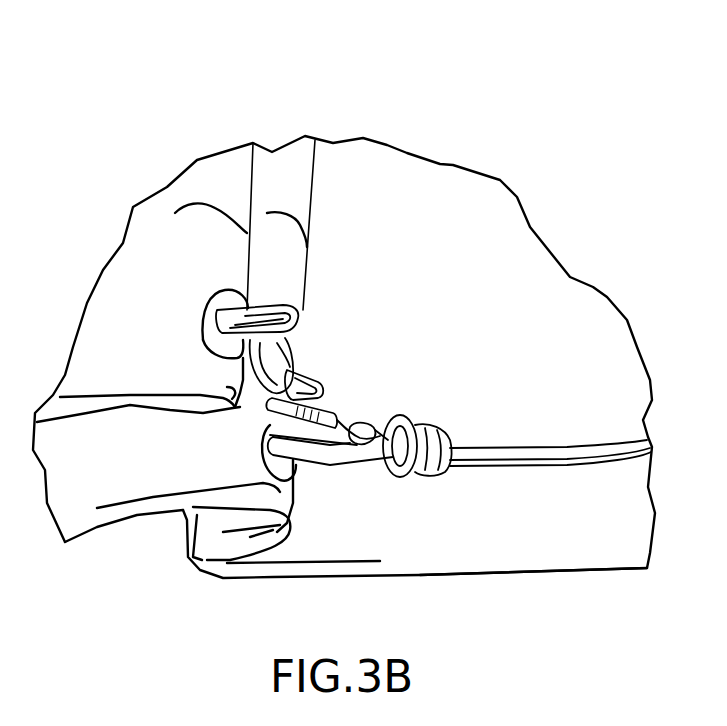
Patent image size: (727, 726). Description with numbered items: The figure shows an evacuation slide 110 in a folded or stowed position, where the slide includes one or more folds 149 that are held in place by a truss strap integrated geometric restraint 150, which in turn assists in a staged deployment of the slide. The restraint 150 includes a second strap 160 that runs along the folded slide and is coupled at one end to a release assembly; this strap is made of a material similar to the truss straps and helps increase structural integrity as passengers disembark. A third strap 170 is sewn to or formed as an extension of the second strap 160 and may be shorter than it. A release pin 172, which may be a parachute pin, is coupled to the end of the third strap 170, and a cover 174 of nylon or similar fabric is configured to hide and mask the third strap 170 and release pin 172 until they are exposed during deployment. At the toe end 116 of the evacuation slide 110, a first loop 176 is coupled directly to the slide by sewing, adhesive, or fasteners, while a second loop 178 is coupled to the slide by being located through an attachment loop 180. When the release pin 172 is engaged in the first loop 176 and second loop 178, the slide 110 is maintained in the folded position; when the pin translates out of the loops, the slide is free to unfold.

The evacuation slide 110 is at (150, 122).
The toe end 116 is at (228, 160).
The folds 149 is at (297, 198).
The truss strap integrated geometric restraint 150 is at (588, 433).
The second strap 160 is at (530, 458).
The third strap 170 is at (400, 420).
The release pin 172 is at (358, 432).
The cover 174 is at (433, 433).
The first loop 176 is at (300, 310).
The second loop 178 is at (318, 388).
The attachment loop 180 is at (300, 378).